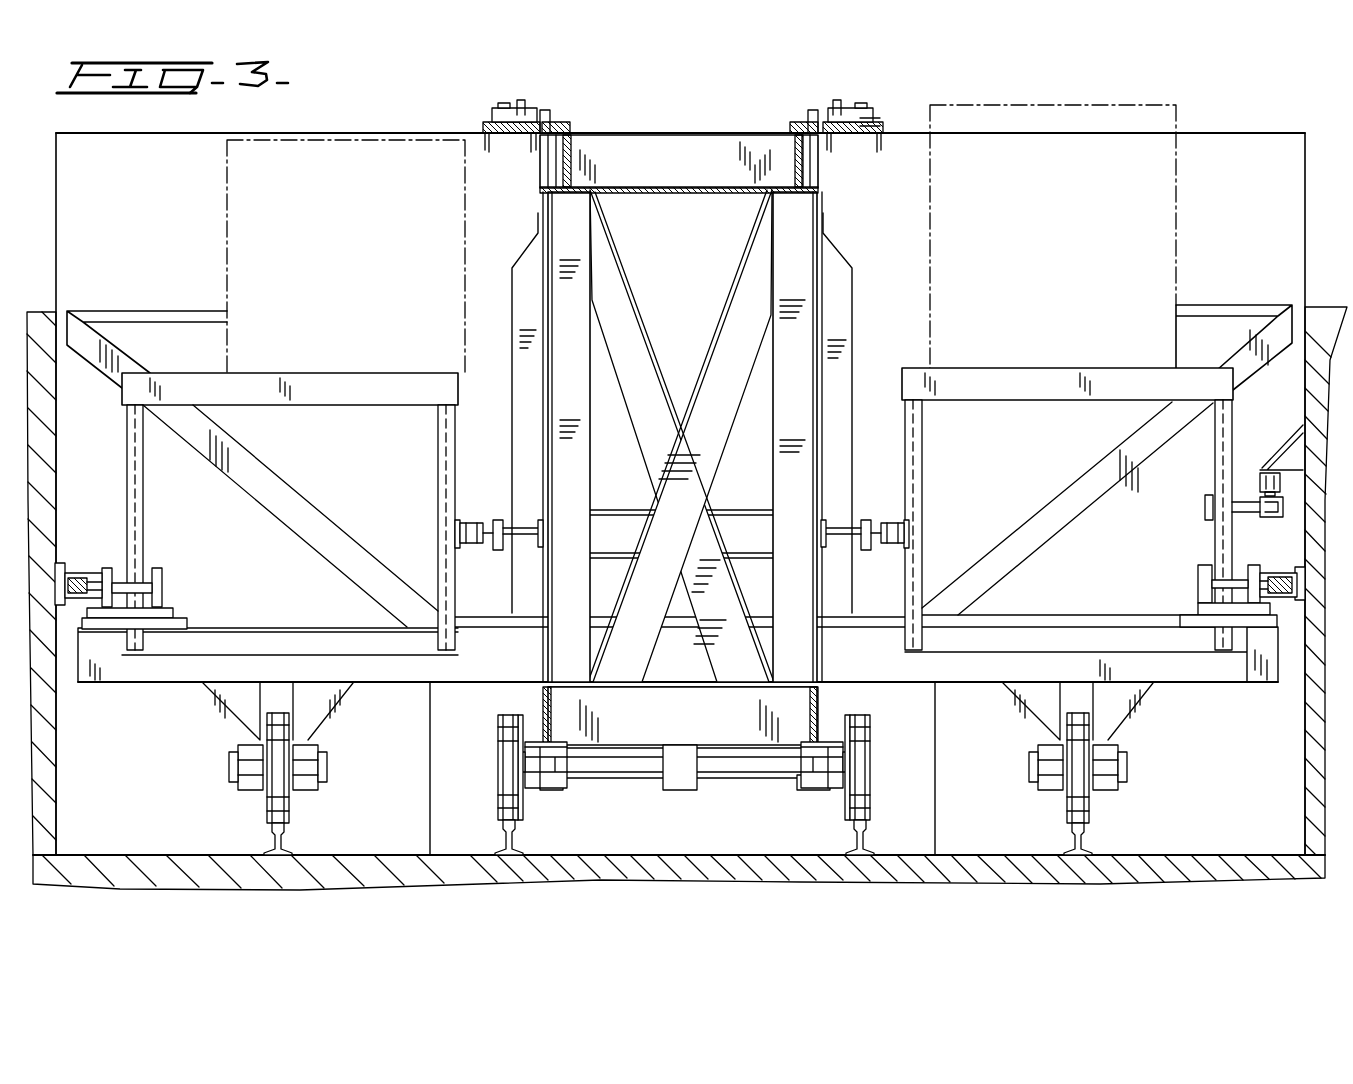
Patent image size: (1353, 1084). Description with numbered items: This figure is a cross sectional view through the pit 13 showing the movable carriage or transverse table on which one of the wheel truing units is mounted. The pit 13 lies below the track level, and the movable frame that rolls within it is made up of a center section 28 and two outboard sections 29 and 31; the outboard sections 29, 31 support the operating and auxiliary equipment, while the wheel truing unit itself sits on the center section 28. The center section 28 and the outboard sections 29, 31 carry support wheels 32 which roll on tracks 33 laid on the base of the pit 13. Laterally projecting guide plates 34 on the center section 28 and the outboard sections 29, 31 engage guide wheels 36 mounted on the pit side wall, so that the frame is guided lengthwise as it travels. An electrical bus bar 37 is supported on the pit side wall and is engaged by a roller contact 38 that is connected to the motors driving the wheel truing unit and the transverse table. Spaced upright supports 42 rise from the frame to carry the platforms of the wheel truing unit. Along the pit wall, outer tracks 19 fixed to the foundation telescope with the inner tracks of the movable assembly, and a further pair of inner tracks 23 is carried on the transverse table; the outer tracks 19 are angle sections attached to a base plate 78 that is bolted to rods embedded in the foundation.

The pit 13 is at (497, 398).
The outer tracks 19 is at (536, 82).
The inner tracks 23 is at (549, 113).
The center section 28 is at (800, 246).
The outboard section 29 is at (205, 367).
The outboard section 31 is at (916, 367).
The support wheels 32 is at (290, 790).
The tracks 33 is at (284, 842).
The guide plates 34 is at (107, 568).
The guide wheels 36 is at (78, 573).
The electrical bus bar 37 is at (1282, 470).
The roller contact 38 is at (1270, 518).
The upright supports 42 is at (846, 296).
The base plate 78 is at (865, 120).